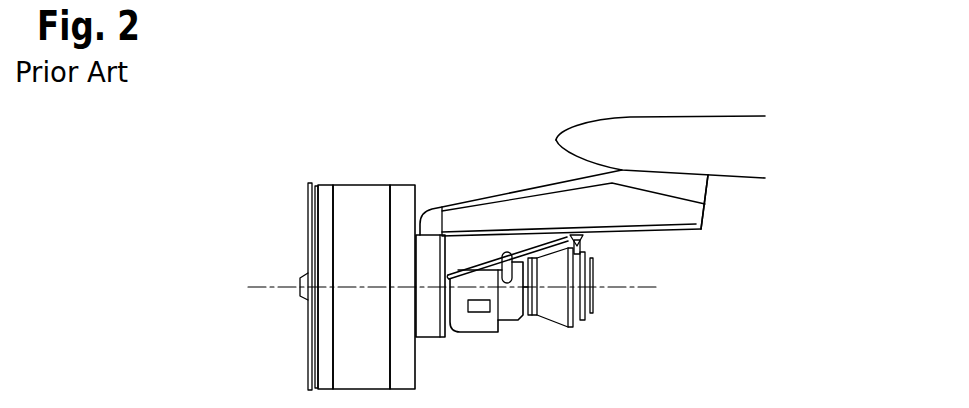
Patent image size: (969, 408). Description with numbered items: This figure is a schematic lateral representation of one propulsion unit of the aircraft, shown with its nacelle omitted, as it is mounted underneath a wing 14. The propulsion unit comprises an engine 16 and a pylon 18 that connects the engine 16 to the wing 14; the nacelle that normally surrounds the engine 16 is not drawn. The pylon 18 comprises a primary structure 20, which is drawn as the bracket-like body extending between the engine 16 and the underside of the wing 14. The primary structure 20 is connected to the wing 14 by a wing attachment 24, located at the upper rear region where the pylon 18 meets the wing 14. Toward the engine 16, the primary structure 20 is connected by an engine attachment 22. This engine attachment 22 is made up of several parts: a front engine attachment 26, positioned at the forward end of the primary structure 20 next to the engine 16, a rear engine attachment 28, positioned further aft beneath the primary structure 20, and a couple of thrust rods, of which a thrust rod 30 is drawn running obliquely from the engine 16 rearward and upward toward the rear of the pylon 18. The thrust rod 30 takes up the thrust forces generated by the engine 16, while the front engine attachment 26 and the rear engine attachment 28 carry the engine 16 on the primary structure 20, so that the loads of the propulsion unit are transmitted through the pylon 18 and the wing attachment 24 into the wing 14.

The wing 14 is at (645, 116).
The engine 16 is at (286, 327).
The pylon 18 is at (444, 160).
The primary structure 20 is at (543, 200).
The engine attachment 22 is at (600, 255).
The wing attachment 24 is at (742, 205).
The front engine attachment 26 is at (400, 229).
The rear engine attachment 28 is at (601, 239).
The thrust rod 30 is at (510, 225).